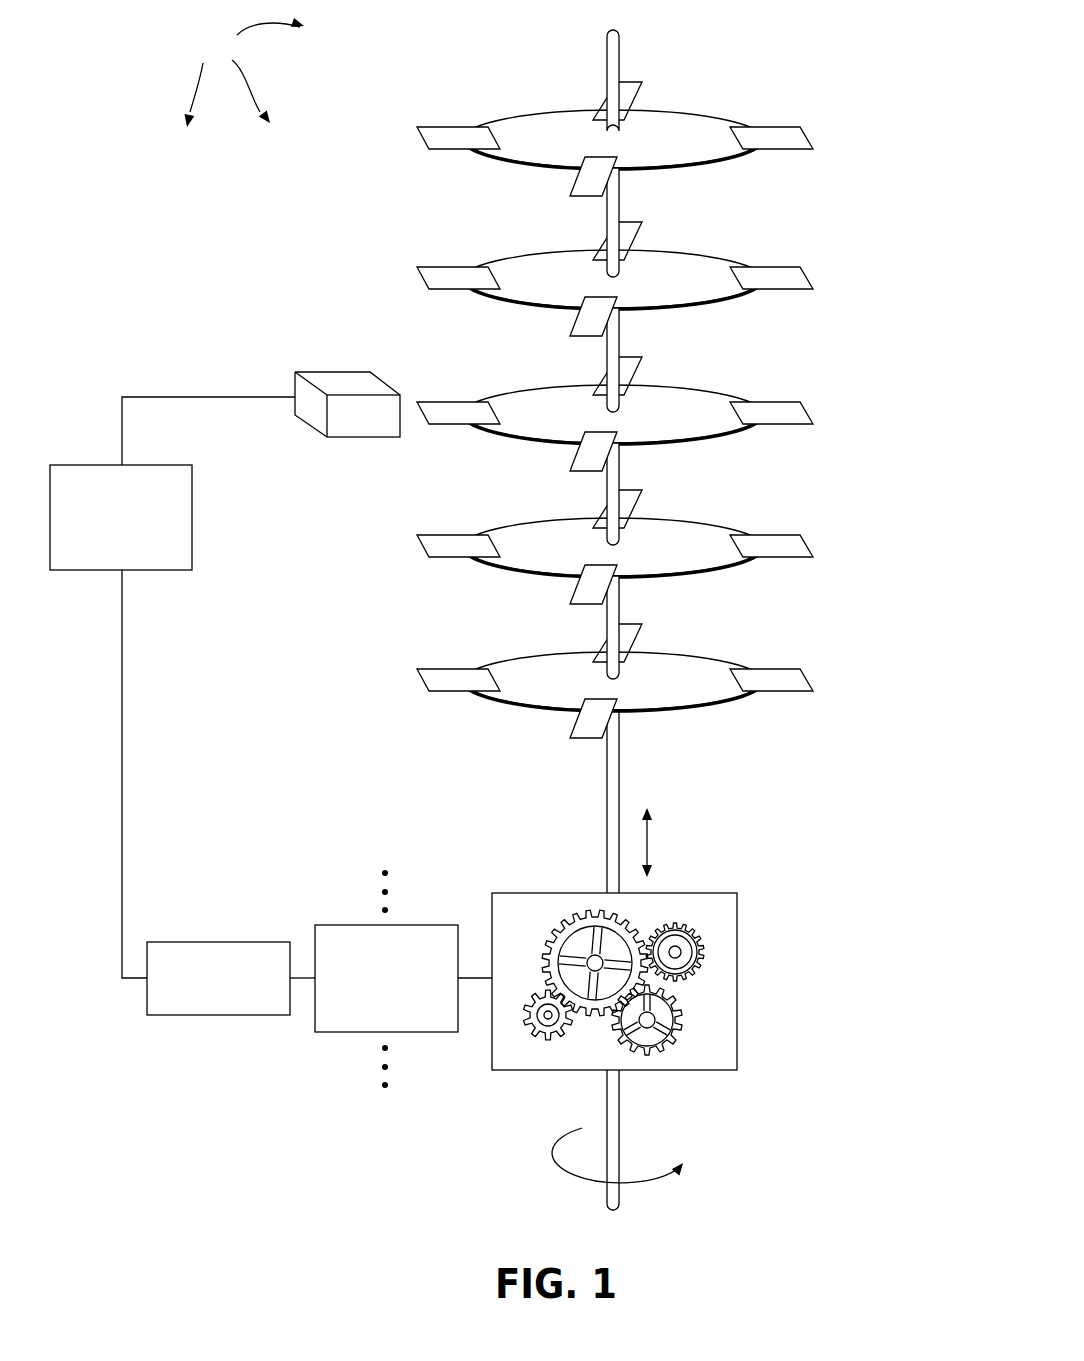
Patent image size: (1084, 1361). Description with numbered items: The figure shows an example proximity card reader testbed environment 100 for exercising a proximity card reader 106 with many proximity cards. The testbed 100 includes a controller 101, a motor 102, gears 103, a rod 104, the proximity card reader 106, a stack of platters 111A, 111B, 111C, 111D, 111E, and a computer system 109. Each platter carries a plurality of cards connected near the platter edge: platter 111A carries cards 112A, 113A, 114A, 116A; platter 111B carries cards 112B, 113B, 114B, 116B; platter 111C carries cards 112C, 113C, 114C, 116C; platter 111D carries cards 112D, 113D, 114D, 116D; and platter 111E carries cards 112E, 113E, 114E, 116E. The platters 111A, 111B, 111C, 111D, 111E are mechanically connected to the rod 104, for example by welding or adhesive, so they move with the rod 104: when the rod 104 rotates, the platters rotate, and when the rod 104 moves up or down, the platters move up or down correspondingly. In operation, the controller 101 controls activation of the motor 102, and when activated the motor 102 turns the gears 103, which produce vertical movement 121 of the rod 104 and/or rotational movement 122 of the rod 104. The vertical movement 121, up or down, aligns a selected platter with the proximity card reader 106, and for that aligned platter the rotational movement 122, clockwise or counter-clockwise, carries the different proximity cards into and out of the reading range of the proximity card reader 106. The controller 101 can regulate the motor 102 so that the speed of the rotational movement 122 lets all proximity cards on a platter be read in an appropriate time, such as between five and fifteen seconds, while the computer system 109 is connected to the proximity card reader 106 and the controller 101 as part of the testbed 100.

The proximity card reader testbed environment 100 is at (245, 72).
The controller 101 is at (203, 1003).
The motor 102 is at (372, 1003).
The gears 103 is at (737, 983).
The rod 104 is at (620, 787).
The proximity card reader 106 is at (313, 370).
The computer system 109 is at (105, 556).
The platter 111A is at (733, 702).
The platter 111B is at (733, 568).
The platter 111C is at (733, 435).
The platter 111D is at (733, 300).
The platter 111E is at (733, 160).
The card 112A is at (438, 675).
The card 112B is at (438, 541).
The card 112C is at (438, 408).
The card 112D is at (438, 273).
The card 112E is at (438, 133).
The card 113A is at (640, 639).
The card 113B is at (640, 505).
The card 113C is at (640, 372).
The card 113D is at (640, 237).
The card 113E is at (640, 97).
The card 114A is at (802, 680).
The card 114B is at (802, 546).
The card 114C is at (802, 413).
The card 114D is at (802, 278).
The card 114E is at (802, 138).
The card 116A is at (581, 723).
The card 116B is at (581, 589).
The card 116C is at (581, 456).
The card 116D is at (581, 321).
The card 116E is at (581, 181).
The vertical movement 121 is at (658, 850).
The rotational movement 122 is at (650, 1182).